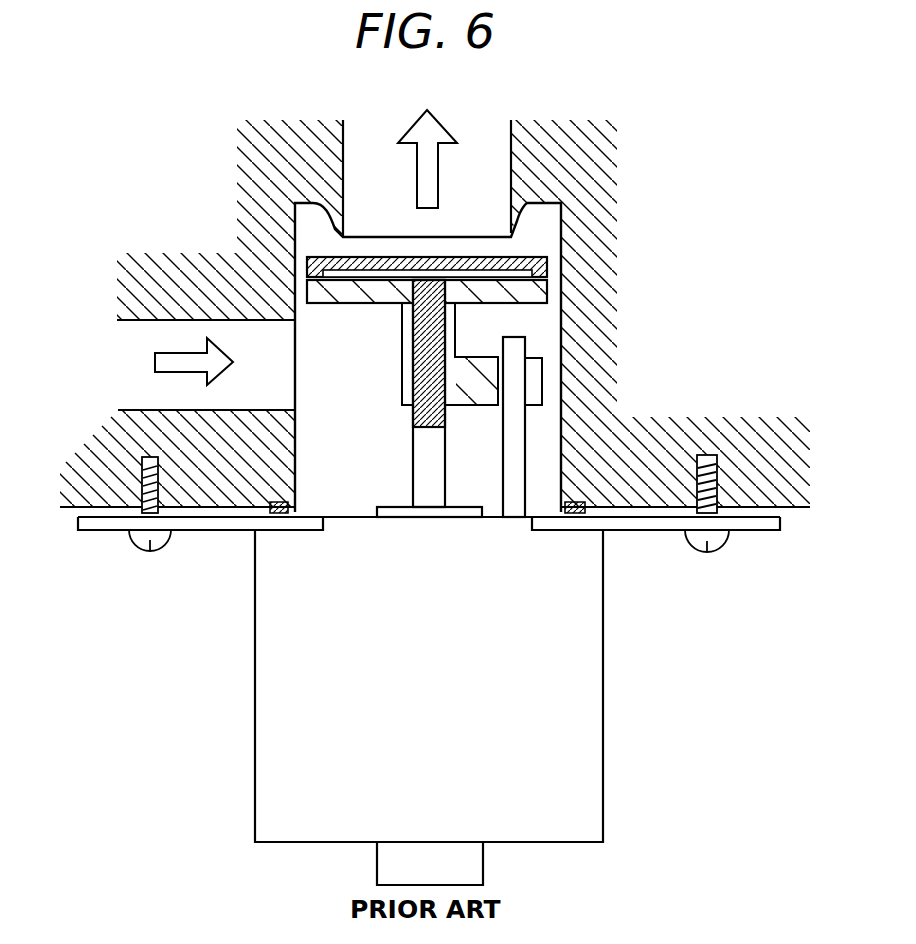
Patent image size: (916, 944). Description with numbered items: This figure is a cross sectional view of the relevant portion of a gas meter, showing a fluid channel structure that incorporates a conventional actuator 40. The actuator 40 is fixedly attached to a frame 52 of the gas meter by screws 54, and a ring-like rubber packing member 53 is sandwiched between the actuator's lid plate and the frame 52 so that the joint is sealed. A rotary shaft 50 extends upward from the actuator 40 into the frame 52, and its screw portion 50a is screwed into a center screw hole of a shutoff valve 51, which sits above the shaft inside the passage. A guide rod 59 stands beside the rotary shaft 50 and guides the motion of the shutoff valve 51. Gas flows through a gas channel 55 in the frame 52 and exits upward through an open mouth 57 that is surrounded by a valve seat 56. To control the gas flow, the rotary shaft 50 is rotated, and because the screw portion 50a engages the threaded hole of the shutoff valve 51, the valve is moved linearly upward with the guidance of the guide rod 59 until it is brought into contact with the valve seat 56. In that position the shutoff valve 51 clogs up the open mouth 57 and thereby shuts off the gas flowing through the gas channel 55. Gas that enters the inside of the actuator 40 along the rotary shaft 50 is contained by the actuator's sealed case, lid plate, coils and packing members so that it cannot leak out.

The actuator 40 is at (580, 705).
The rotary shaft 50 is at (294, 338).
The screw portion 50a is at (410, 392).
The shutoff valve 51 is at (547, 287).
The frame 52 is at (790, 452).
The ring-like rubber packing member 53 is at (283, 517).
The screws 54 is at (152, 550).
The gas channel 55 is at (160, 393).
The valve seat 56 is at (527, 217).
The open mouth 57 is at (473, 192).
The guide rod 59 is at (525, 443).